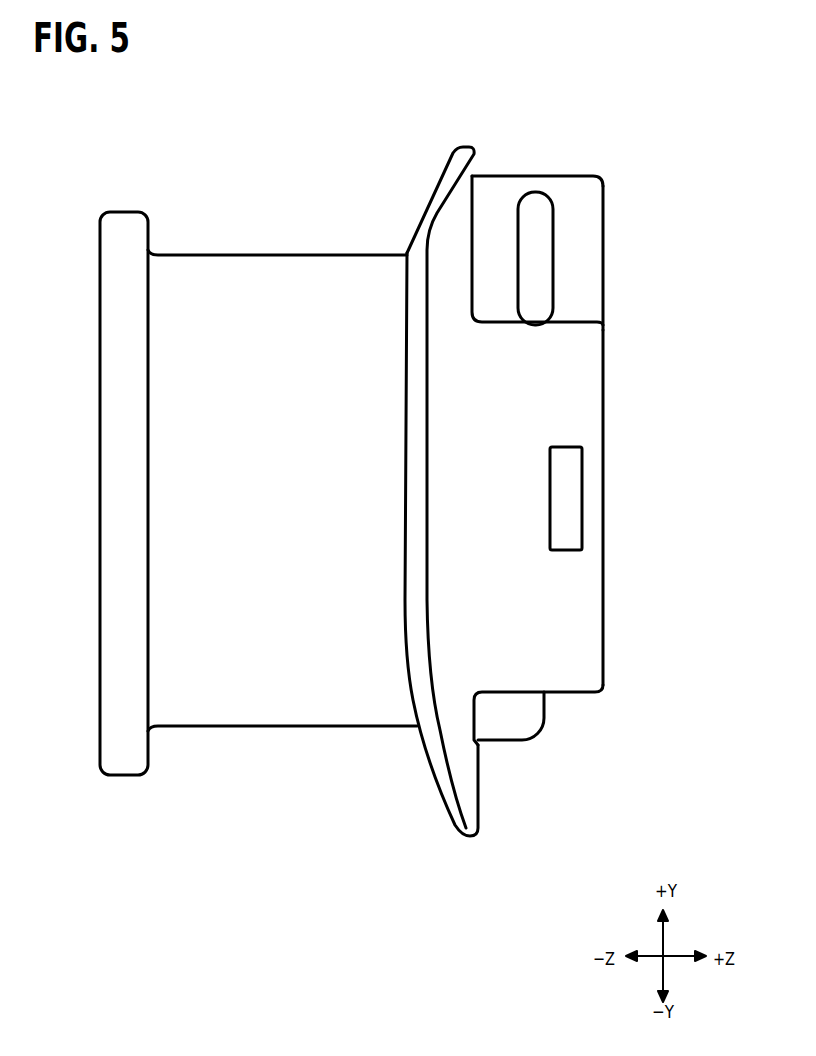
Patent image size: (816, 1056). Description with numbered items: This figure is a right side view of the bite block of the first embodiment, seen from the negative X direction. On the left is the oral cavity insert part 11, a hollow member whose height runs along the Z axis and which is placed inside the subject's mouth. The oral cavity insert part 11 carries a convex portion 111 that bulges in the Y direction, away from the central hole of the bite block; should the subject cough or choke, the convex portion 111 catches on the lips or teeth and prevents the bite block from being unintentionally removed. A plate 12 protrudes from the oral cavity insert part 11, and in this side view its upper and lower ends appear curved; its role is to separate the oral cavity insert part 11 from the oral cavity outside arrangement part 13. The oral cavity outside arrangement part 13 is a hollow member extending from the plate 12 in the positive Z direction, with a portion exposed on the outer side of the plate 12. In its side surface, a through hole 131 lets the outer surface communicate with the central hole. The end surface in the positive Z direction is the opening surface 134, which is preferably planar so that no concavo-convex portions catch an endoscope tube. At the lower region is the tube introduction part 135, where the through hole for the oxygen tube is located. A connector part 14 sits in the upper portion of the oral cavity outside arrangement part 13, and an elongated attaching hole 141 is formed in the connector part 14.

The oral cavity insert part 11 is at (258, 489).
The convex portion 111 is at (132, 228).
The plate 12 is at (448, 787).
The oral cavity outside arrangement part 13 is at (591, 483).
The through hole 131 is at (572, 493).
The opening surface 134 is at (603, 420).
The tube introduction part 135 is at (515, 712).
The connector part 14 is at (566, 219).
The attaching hole 141 is at (543, 205).